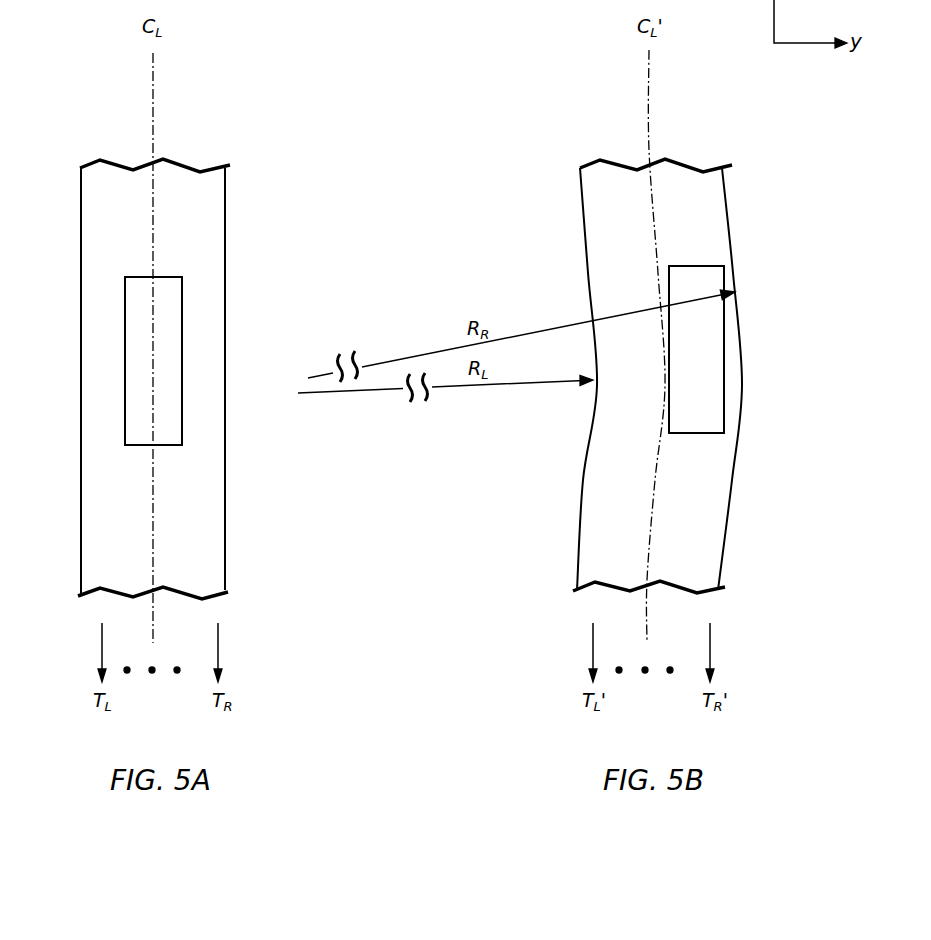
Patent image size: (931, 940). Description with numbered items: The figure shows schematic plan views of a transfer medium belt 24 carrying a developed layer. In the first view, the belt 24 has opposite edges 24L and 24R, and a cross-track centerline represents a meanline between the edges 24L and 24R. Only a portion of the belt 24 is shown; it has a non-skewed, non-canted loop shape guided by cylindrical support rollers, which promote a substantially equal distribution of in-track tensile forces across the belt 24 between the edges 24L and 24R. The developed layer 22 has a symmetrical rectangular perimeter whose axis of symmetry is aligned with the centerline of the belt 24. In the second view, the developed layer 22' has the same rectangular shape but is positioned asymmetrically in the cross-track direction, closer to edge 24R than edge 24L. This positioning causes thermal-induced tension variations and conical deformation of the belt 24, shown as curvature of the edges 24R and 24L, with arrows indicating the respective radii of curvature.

In FIG. 5A, the transfer medium belt 24 is at (147, 377).
In FIG. 5B, the transfer medium belt 24 is at (647, 374).
In FIG. 5A, the left edge 24L is at (81, 272).
In FIG. 5B, the left edge 24L is at (588, 271).
In FIG. 5A, the right edge 24R is at (227, 203).
In FIG. 5B, the right edge 24R is at (727, 203).
In FIG. 5A, the developed layer 22 is at (193, 361).
In FIG. 5B, the developed layer 22' is at (739, 349).